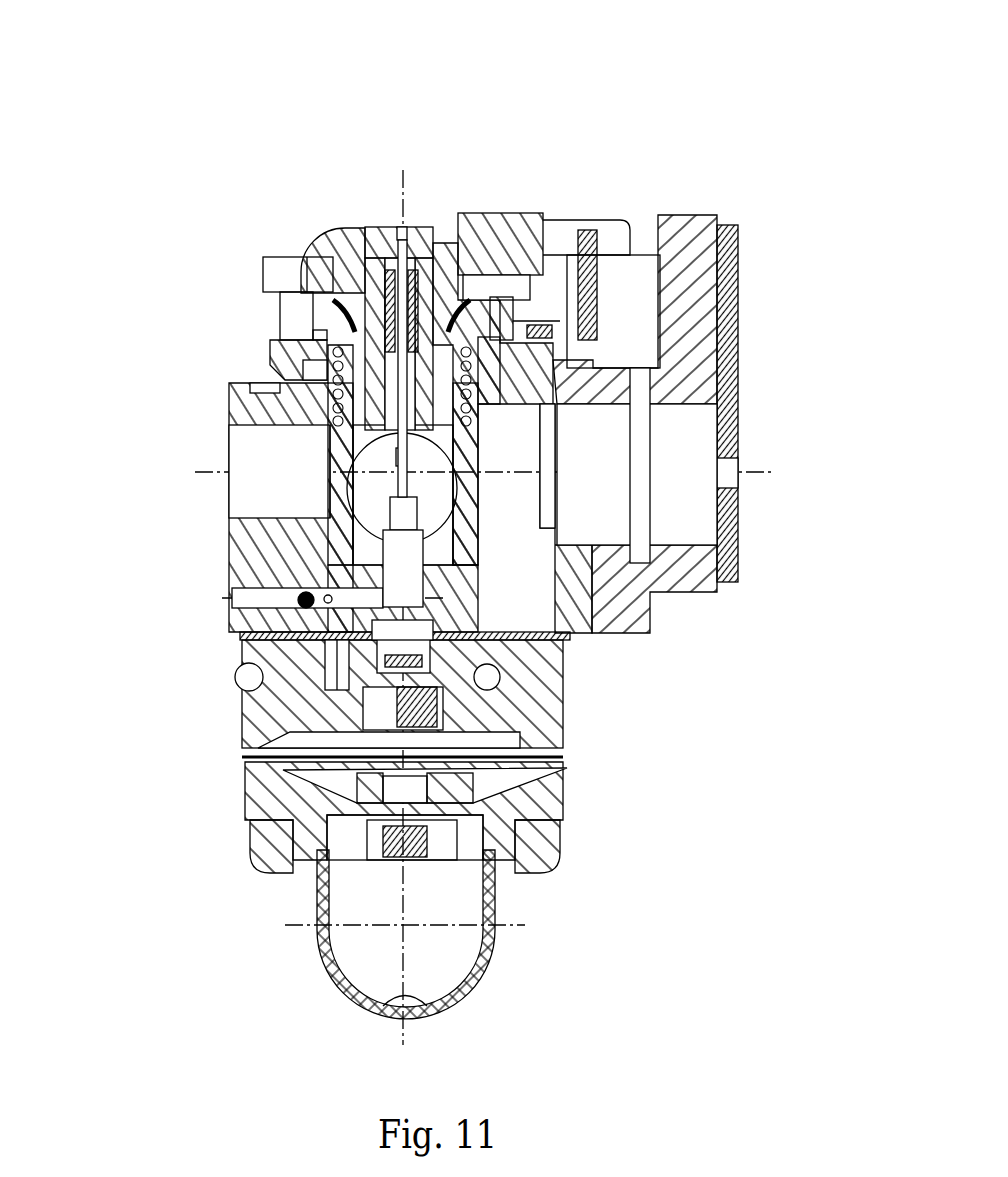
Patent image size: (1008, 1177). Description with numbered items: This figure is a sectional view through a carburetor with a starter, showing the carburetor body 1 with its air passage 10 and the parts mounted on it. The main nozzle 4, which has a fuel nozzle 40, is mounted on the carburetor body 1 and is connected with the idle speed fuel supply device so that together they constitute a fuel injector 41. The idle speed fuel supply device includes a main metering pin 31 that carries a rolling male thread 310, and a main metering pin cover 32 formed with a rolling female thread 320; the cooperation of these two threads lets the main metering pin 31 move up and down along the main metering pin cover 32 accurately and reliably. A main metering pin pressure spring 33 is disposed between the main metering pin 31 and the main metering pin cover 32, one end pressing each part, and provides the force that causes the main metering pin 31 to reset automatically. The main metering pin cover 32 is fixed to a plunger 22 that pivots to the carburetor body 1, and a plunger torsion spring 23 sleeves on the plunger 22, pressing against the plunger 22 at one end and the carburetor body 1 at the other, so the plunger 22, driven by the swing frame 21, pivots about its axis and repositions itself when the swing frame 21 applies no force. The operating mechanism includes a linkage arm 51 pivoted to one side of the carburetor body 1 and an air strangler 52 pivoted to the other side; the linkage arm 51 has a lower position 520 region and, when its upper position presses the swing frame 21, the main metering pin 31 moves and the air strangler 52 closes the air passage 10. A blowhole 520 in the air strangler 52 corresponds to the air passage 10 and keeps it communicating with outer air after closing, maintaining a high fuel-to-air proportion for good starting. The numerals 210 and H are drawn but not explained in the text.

The carburetor body 1 is at (568, 782).
The main nozzle 4 is at (372, 528).
The air passage 10 is at (692, 482).
The swing frame 21 is at (487, 235).
The plunger 22 is at (330, 366).
The plunger torsion spring 23 is at (305, 384).
The main metering pin 31 is at (372, 250).
The main metering pin cover 32 is at (376, 238).
The main metering pin pressure spring 33 is at (330, 300).
The fuel nozzle 40 is at (352, 436).
The fuel injector 41 is at (378, 479).
The linkage arm 51 is at (603, 233).
The air strangler 52 is at (735, 410).
The cap projection 210 is at (567, 227).
The rolling male thread 310 is at (400, 295).
The rolling female thread 320 is at (390, 276).
The blowhole 520 is at (732, 467).
The stroke height H is at (330, 492).